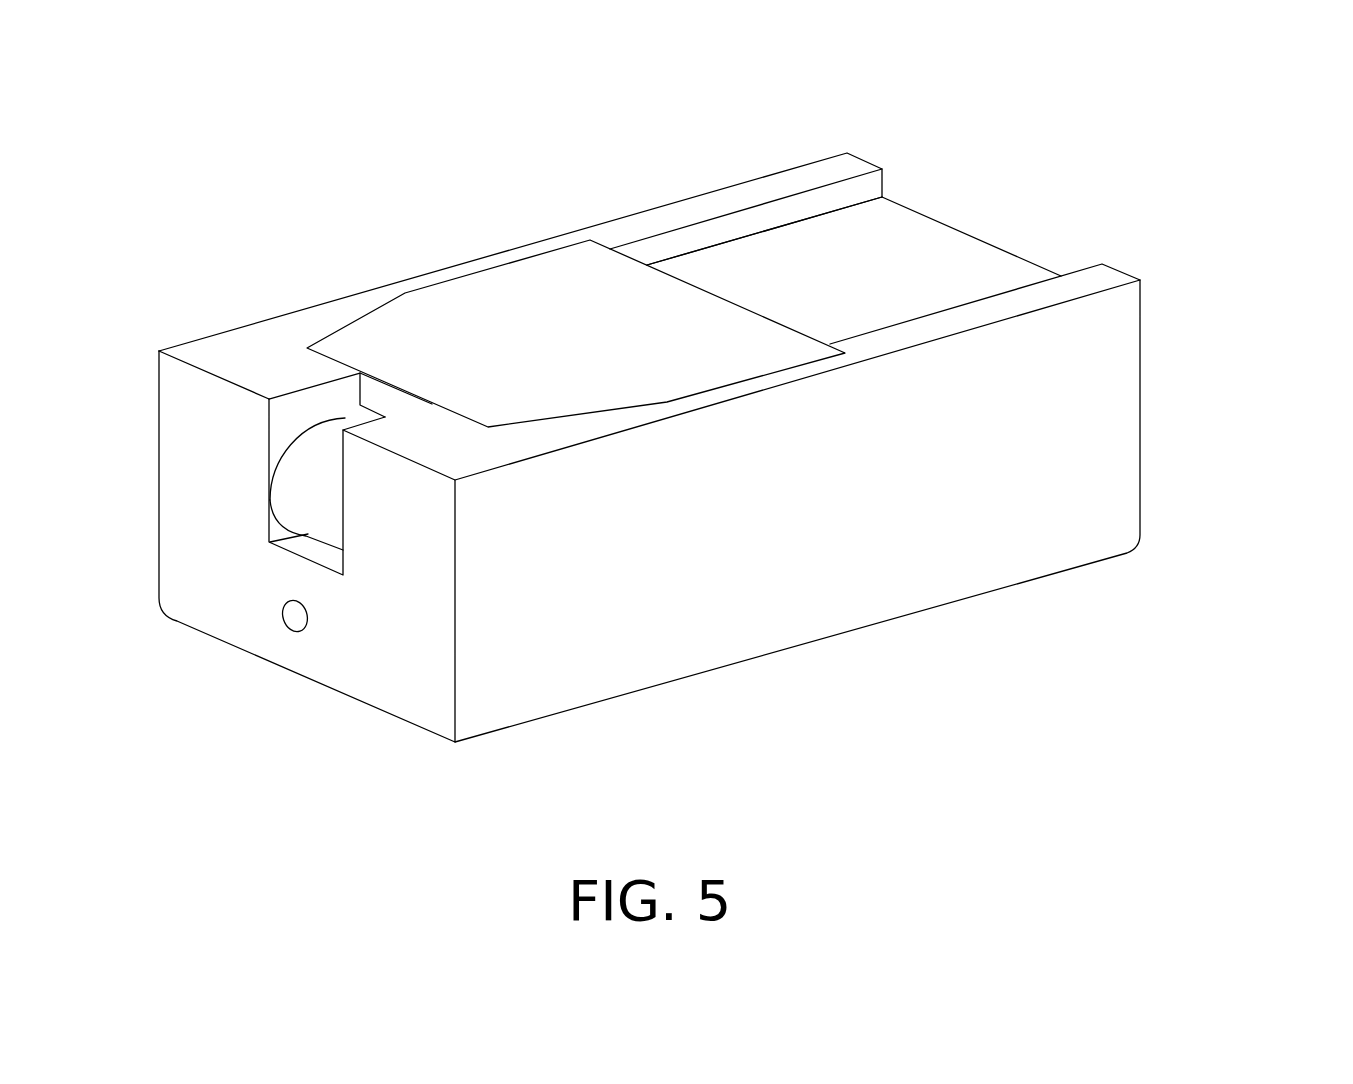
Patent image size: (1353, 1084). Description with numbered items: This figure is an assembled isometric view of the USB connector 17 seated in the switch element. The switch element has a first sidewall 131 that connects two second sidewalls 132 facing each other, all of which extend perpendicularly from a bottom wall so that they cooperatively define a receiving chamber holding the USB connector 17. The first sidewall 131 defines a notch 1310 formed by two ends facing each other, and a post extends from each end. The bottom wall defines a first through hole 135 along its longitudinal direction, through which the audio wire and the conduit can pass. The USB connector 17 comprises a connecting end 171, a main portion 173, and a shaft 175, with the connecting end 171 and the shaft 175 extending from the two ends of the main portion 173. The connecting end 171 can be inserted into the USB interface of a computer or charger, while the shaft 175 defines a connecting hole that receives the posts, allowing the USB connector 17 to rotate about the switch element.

The USB connector 17 is at (582, 244).
The connecting end 171 is at (834, 181).
The main portion 173 is at (496, 320).
The shaft 175 is at (318, 445).
The first sidewall 131 is at (398, 655).
The second sidewalls 132 is at (1068, 443).
The notch 1310 is at (293, 539).
The first through hole 135 is at (297, 615).